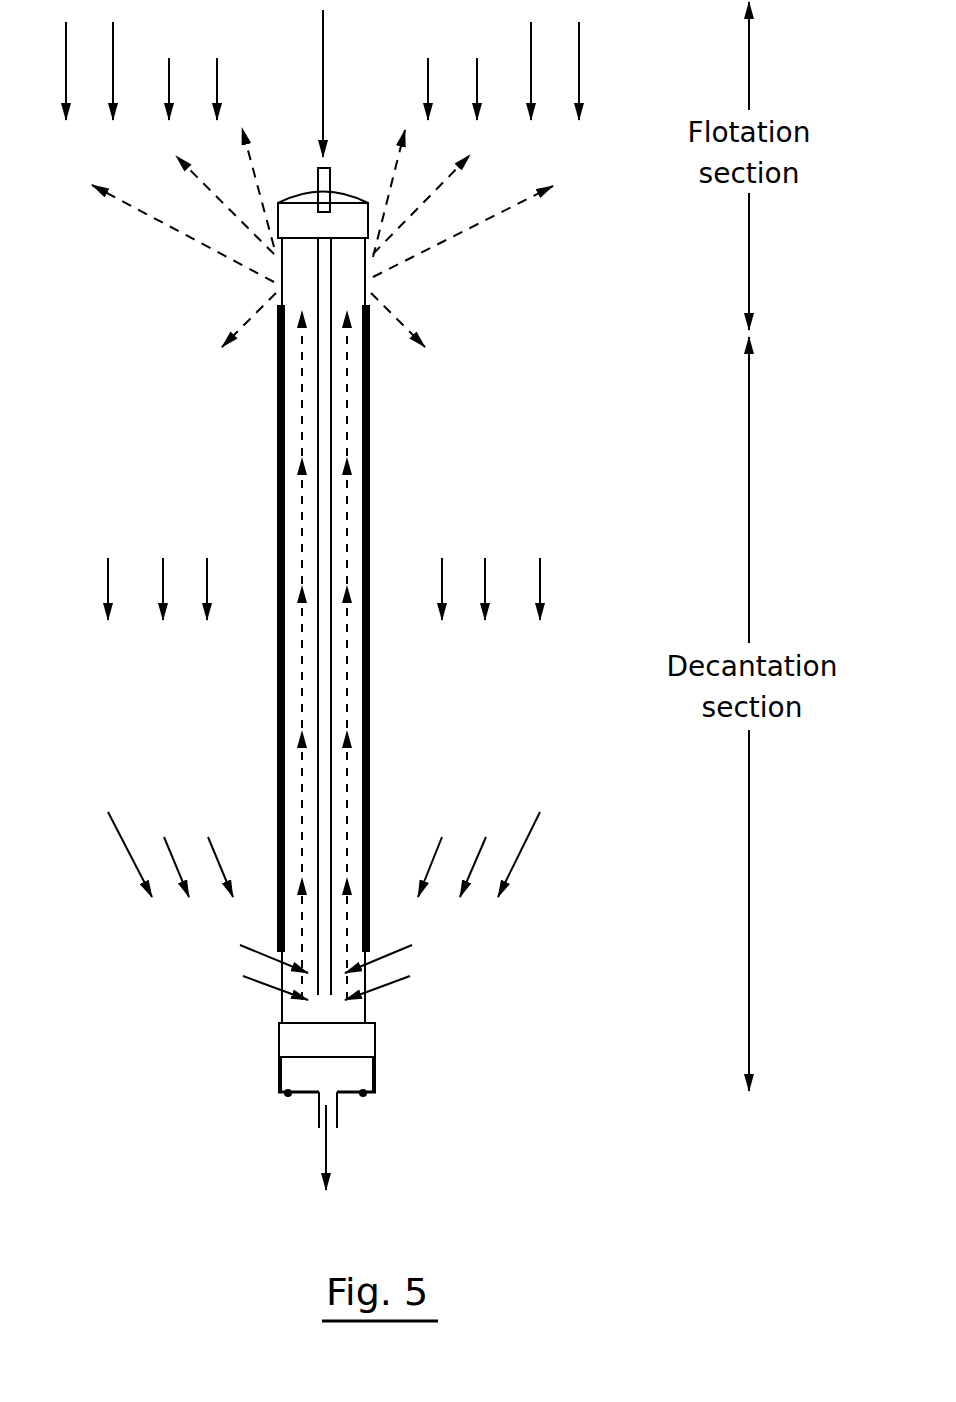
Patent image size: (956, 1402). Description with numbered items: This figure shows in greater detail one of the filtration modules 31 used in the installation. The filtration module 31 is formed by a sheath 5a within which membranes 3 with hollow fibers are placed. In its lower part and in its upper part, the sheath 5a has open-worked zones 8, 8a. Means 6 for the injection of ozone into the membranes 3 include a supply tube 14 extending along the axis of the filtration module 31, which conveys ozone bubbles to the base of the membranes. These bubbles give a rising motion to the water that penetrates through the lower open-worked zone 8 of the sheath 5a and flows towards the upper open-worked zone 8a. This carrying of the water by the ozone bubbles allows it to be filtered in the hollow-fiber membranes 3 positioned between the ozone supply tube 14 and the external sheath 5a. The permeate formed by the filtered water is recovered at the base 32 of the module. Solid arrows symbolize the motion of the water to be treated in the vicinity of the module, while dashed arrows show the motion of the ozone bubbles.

The membranes 3 is at (352, 675).
The sheath 5a is at (370, 458).
The means for the injection of ozone 6 is at (322, 183).
The open-worked zone 8 is at (367, 1000).
The upper open-worked zone 8a is at (366, 277).
The supply tube 14 is at (333, 539).
The filtration module 31 is at (374, 742).
The base of the module 32 is at (338, 1113).